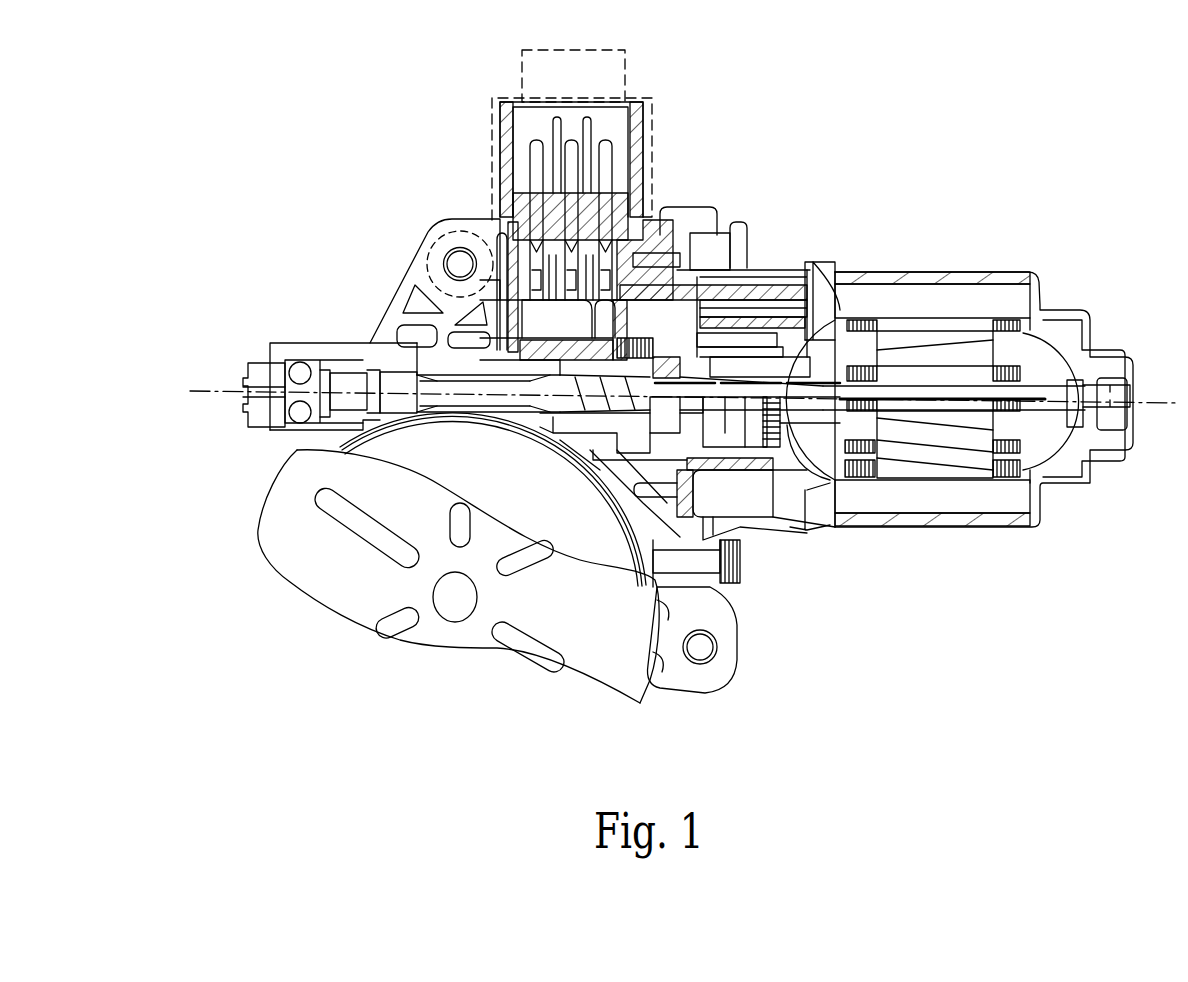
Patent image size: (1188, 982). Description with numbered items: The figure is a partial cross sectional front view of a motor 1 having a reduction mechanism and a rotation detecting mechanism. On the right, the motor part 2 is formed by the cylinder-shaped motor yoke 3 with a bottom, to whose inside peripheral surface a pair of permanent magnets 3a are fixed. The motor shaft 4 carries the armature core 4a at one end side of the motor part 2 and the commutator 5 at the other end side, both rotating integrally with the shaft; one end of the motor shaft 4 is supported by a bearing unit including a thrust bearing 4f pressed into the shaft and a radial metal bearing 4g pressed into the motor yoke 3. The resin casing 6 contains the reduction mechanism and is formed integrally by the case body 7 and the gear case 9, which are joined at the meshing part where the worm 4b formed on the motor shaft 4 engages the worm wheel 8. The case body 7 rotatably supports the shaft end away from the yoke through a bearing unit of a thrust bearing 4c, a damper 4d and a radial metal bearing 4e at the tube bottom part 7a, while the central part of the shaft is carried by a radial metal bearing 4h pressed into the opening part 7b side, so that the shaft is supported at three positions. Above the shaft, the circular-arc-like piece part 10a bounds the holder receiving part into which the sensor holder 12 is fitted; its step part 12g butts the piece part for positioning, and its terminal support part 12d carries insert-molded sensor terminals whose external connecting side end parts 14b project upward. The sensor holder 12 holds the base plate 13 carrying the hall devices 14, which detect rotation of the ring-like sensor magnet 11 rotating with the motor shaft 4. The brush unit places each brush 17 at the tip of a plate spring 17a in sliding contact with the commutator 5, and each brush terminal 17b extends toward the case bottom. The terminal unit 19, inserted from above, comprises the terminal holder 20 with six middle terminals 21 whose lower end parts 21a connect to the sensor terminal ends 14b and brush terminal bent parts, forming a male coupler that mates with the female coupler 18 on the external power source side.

The motor 1 is at (945, 148).
The motor part 2 is at (1055, 233).
The motor yoke 3 is at (1002, 278).
The permanent magnets 3a is at (950, 298).
The motor shaft 4 is at (1047, 413).
The armature core 4a is at (970, 450).
The worm 4b is at (330, 367).
The thrust bearing 4c is at (295, 394).
The damper 4d is at (292, 411).
The radial metal bearing 4e is at (332, 365).
The thrust bearing 4f is at (1118, 385).
The radial metal bearing 4g is at (1100, 432).
The radial metal bearing 4h is at (560, 442).
The commutator 5 is at (750, 520).
The casing 6 is at (382, 122).
The case body 7 is at (355, 280).
The tube bottom part 7a is at (278, 370).
The opening part 7b is at (700, 345).
The worm wheel 8 is at (340, 437).
The gear case 9 is at (688, 703).
The circular-arc-like piece part 10a is at (490, 338).
The sensor magnet 11 is at (727, 537).
The sensor holder 12 is at (690, 270).
The terminal support part 12d is at (530, 320).
The step part 12g is at (503, 430).
The base plate 13 is at (645, 335).
The hall devices 14 is at (595, 415).
The external connecting side end parts 14b is at (457, 252).
The brush 17 is at (800, 262).
The plate spring 17a is at (778, 262).
The brush terminal 17b is at (827, 265).
The coupler 18 is at (652, 102).
The terminal unit 19 is at (608, 123).
The terminal holder 20 is at (623, 230).
The middle terminals 21 is at (537, 148).
The lower end part 21a is at (525, 205).